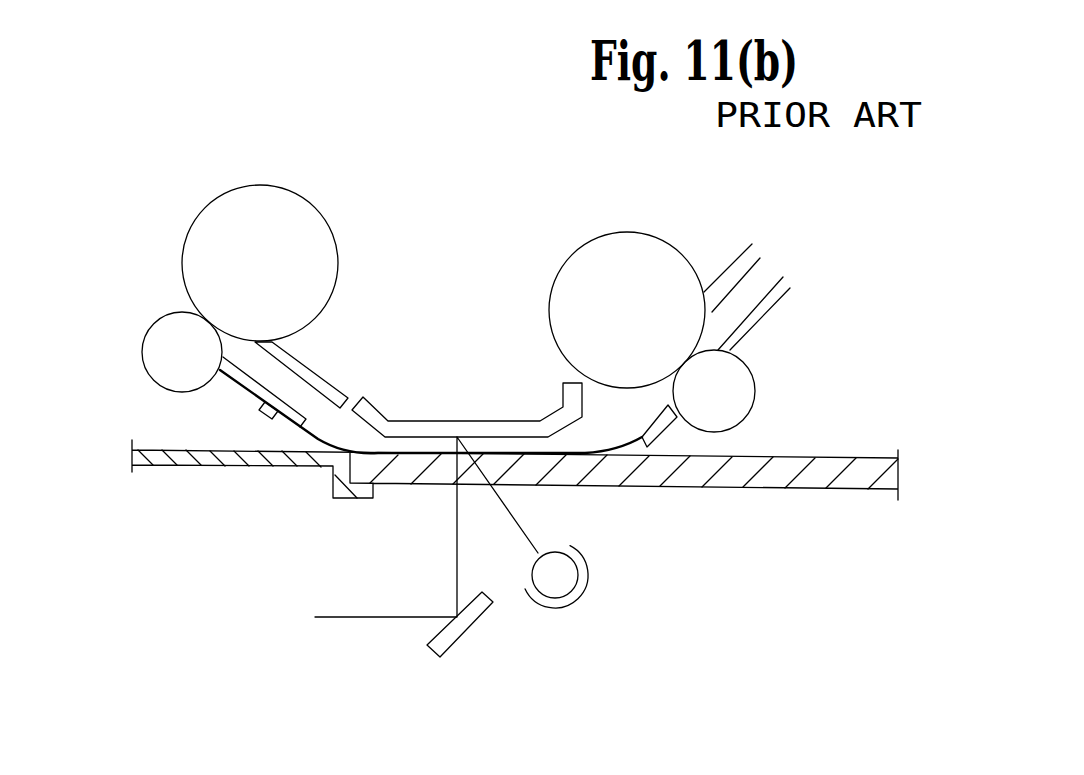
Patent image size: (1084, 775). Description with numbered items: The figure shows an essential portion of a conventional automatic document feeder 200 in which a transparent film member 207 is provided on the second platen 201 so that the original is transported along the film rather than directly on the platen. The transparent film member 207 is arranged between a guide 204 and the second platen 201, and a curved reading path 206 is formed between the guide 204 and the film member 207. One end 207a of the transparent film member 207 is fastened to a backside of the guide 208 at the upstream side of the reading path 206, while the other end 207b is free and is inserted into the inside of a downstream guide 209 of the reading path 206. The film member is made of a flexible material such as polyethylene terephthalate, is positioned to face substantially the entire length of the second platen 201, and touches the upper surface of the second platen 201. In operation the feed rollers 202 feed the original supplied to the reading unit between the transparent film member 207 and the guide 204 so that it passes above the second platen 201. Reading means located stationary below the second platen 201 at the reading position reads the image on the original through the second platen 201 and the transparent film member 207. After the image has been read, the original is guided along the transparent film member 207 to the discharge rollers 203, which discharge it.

The image reading device (prior art) 200 is at (612, 648).
The second platen 201 is at (695, 478).
The feed rollers 202 is at (254, 204).
The discharge rollers 203 is at (633, 250).
The guide 204 is at (448, 425).
The reading path 206 is at (417, 443).
The transparent film member 207 is at (309, 432).
The end of the transparent film member 207a is at (265, 406).
The other end of the transparent film member 207b is at (658, 414).
The guide 208 is at (251, 393).
The downstream guide 209 is at (673, 420).